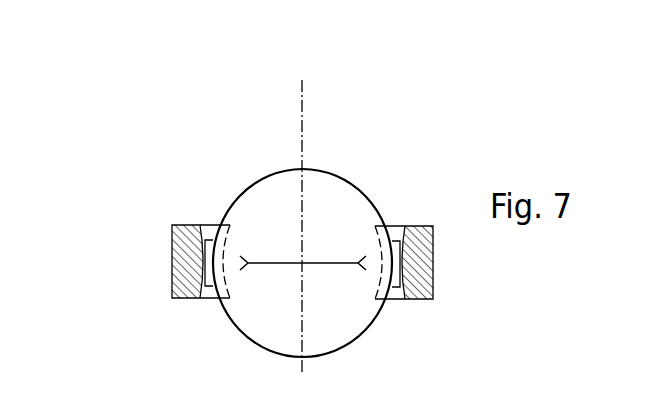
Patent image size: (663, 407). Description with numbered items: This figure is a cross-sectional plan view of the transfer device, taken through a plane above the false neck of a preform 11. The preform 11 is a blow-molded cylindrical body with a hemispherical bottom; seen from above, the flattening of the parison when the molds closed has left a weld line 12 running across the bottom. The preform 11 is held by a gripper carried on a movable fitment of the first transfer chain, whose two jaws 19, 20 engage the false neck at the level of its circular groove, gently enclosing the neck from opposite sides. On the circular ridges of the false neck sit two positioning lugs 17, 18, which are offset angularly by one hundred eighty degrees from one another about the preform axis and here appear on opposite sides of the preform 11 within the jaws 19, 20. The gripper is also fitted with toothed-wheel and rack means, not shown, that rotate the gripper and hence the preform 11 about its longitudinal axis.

The cylindrical preform 11 is at (347, 318).
The weld line 12 is at (333, 262).
The positioning lug 17 is at (207, 257).
The positioning lug 18 is at (397, 255).
The gripper jaw 19 is at (185, 284).
The gripper jaw 20 is at (422, 282).